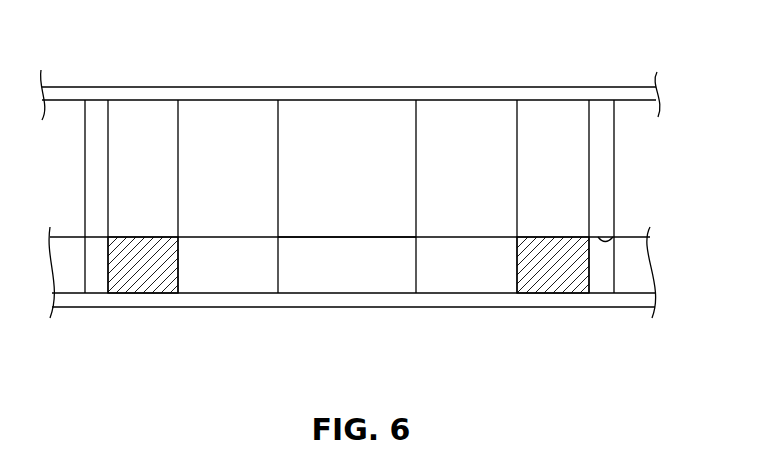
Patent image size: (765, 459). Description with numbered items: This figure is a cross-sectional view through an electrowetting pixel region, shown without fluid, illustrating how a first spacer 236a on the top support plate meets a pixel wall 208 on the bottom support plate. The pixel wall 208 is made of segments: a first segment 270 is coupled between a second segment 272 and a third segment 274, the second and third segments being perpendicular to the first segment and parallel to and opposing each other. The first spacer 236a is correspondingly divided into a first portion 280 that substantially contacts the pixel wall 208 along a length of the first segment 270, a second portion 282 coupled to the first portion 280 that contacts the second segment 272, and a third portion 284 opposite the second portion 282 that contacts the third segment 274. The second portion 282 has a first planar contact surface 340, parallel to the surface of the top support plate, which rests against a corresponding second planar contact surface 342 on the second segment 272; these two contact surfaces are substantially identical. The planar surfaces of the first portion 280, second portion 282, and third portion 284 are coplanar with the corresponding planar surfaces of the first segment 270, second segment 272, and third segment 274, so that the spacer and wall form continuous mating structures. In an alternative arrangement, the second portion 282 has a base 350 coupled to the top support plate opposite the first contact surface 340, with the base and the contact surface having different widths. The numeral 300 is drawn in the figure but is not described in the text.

The pixel wall 208 is at (438, 316).
The first spacer 236a is at (486, 78).
The first segment 270 is at (313, 283).
The second segment 272 is at (542, 268).
The third segment 274 is at (137, 277).
The first portion 280 is at (349, 117).
The second portion 282 is at (561, 113).
The third portion 284 is at (223, 118).
The lower layer 300 is at (627, 275).
The first planar contact surface 340 is at (625, 237).
The second planar contact surface 342 is at (547, 237).
The base 350 is at (122, 99).